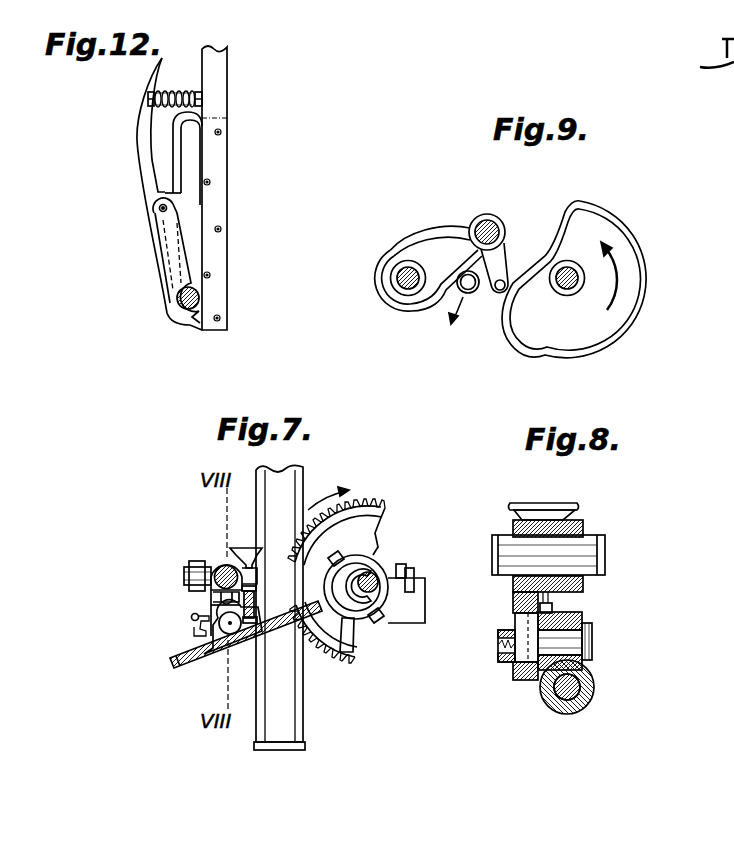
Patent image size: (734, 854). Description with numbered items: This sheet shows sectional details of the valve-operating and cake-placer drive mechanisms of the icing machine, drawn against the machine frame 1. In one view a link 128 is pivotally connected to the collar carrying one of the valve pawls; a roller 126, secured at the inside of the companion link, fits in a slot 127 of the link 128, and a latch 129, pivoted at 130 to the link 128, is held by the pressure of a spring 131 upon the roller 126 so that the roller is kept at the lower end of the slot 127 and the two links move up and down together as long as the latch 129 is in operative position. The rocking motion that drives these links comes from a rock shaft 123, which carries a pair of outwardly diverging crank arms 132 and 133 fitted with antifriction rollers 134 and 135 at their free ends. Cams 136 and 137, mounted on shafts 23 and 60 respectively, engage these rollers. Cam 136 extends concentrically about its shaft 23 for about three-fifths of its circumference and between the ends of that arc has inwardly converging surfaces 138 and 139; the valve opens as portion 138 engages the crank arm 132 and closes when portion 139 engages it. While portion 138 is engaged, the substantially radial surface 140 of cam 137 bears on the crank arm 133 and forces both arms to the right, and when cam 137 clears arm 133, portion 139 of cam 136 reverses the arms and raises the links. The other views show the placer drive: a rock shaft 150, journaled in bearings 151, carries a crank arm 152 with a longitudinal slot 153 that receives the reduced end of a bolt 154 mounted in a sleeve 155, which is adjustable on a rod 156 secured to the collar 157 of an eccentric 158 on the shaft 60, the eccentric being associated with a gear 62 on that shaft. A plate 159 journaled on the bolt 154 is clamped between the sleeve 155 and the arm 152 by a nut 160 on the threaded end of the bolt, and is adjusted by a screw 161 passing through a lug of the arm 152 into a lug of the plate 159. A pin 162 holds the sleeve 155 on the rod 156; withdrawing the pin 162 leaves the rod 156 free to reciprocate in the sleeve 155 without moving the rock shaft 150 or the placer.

In FIG. 7, the frame bar 1 is at (303, 473).
In FIG. 9, the shaft 23 is at (587, 278).
In FIG. 9, the shaft 60 is at (397, 279).
In FIG. 7, the shaft 60 is at (374, 590).
In FIG. 7, the gear wheel 62 is at (363, 525).
In FIG. 9, the rock shaft 123 is at (486, 220).
In FIG. 12, the roller 126 is at (177, 313).
In FIG. 12, the slot 127 is at (182, 208).
In FIG. 12, the link 128 is at (172, 159).
In FIG. 12, the latch 129 is at (165, 238).
In FIG. 12, the pivot 130 is at (159, 208).
In FIG. 12, the spring 131 is at (175, 92).
In FIG. 9, the crank arm 132 is at (503, 262).
In FIG. 9, the crank arm 133 is at (473, 296).
In FIG. 9, the antifriction roller 134 is at (510, 287).
In FIG. 9, the antifriction roller 135 is at (463, 296).
In FIG. 9, the cam 136 is at (607, 232).
In FIG. 9, the cam 137 is at (428, 252).
In FIG. 9, the converging surface 138 is at (515, 281).
In FIG. 9, the converging surface 139 is at (566, 232).
In FIG. 9, the radial surface 140 is at (478, 296).
In FIG. 7, the rock shaft 150 is at (226, 566).
In FIG. 7, the bearings 151 is at (183, 567).
In FIG. 8, the bearings 151 is at (597, 552).
In FIG. 7, the crank arm 152 is at (222, 563).
In FIG. 8, the crank arm 152 is at (522, 597).
In FIG. 7, the longitudinal slot 153 is at (213, 597).
In FIG. 8, the longitudinal slot 153 is at (522, 621).
In FIG. 8, the bolt 154 is at (594, 640).
In FIG. 7, the sleeve 155 is at (240, 650).
In FIG. 8, the sleeve 155 is at (592, 677).
In FIG. 7, the rod 156 is at (172, 666).
In FIG. 8, the rod 156 is at (567, 700).
In FIG. 7, the collar 157 is at (367, 552).
In FIG. 7, the eccentric 158 is at (347, 612).
In FIG. 7, the plate 159 is at (228, 601).
In FIG. 8, the plate 159 is at (552, 612).
In FIG. 8, the nut 160 is at (503, 658).
In FIG. 7, the screw 161 is at (243, 547).
In FIG. 8, the screw 161 is at (577, 508).
In FIG. 7, the pin 162 is at (192, 631).